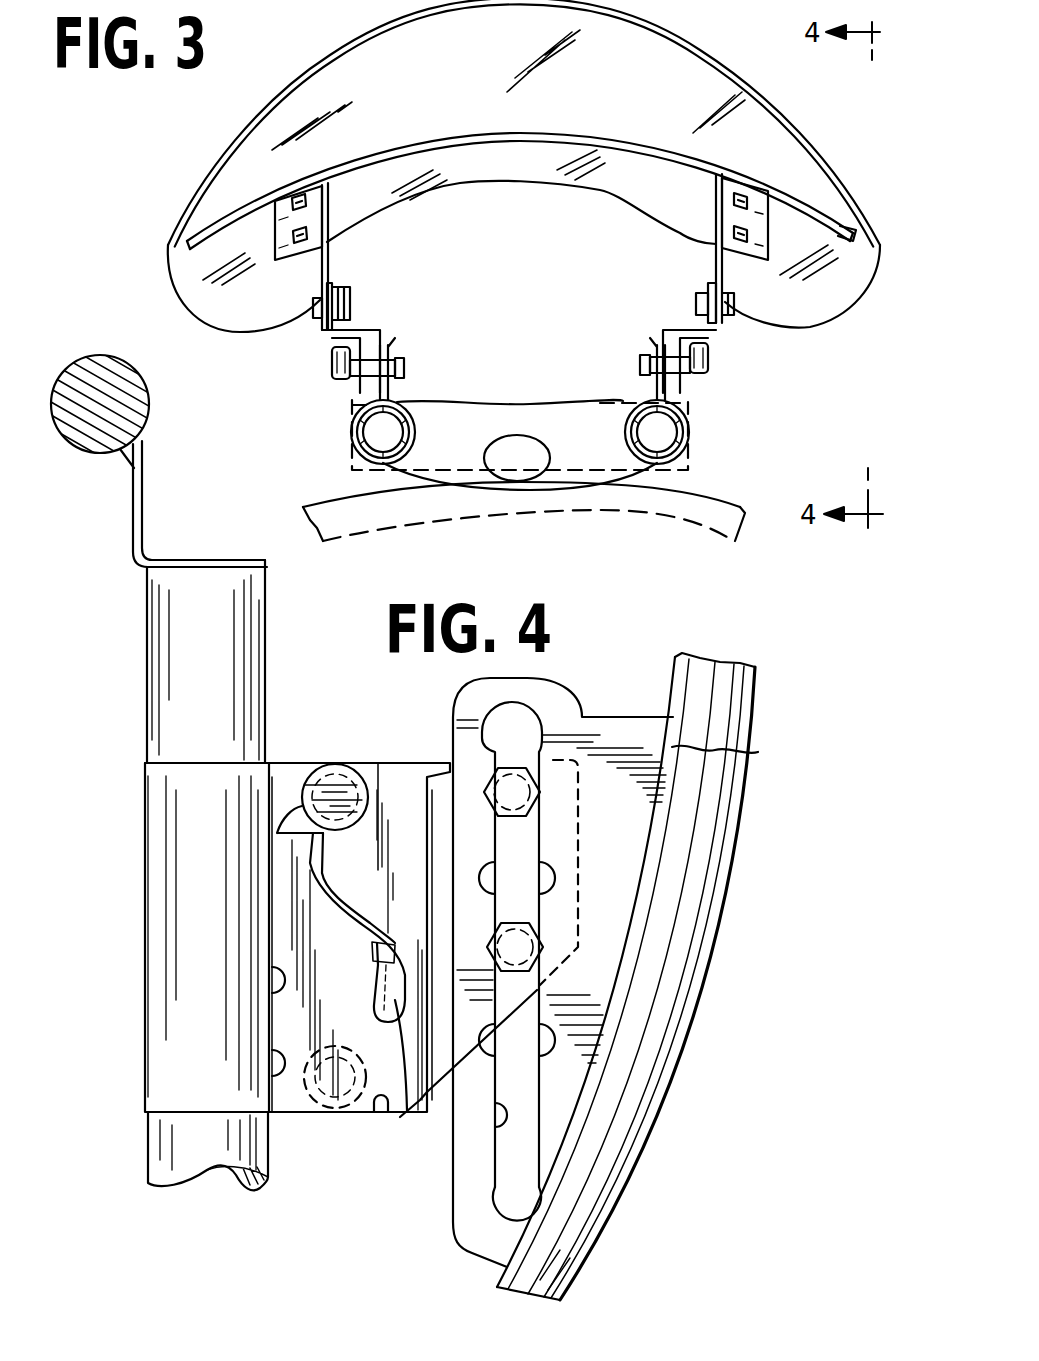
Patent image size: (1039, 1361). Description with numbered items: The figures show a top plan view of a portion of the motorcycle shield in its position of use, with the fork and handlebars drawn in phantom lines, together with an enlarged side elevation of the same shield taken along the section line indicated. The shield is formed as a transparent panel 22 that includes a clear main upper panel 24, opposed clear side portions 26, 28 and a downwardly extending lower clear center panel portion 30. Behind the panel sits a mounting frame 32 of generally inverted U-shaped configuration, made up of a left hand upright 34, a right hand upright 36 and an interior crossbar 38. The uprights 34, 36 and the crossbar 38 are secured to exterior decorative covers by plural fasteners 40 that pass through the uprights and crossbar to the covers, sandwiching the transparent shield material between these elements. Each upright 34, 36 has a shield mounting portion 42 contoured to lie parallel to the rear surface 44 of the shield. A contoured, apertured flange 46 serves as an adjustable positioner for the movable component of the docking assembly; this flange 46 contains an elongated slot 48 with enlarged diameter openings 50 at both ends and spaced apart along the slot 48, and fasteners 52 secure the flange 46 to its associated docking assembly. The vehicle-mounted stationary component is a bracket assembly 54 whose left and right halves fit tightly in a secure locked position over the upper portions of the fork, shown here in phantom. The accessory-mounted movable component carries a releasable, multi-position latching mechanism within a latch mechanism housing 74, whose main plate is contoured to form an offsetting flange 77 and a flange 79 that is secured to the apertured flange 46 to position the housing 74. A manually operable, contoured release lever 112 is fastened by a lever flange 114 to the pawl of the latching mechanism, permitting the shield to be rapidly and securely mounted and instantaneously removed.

In FIG. 3, the transparent panel 22 is at (199, 144).
In FIG. 3, the clear main upper panel 24 is at (646, 48).
In FIG. 3, the clear side portion 26 is at (212, 285).
In FIG. 3, the clear side portion 28 is at (797, 302).
In FIG. 3, the lower clear center panel portion 30 is at (452, 167).
In FIG. 3, the mounting frame 32 is at (354, 163).
In FIG. 3, the left hand upright 34 is at (313, 222).
In FIG. 3, the right hand upright 36 is at (730, 212).
In FIG. 4, the right hand upright 36 is at (678, 685).
In FIG. 3, the interior crossbar 38 is at (511, 140).
In FIG. 3, the fasteners 40 is at (300, 200).
In FIG. 4, the shield mounting portion 42 is at (731, 757).
In FIG. 3, the rear surface 44 is at (833, 255).
In FIG. 4, the apertured flange 46 is at (600, 773).
In FIG. 4, the elongated slot 48 is at (503, 1112).
In FIG. 4, the enlarged diameter openings 50 is at (535, 877).
In FIG. 4, the fasteners 52 is at (500, 787).
In FIG. 3, the bracket assembly 54 is at (689, 390).
In FIG. 4, the latch mechanism housing 74 is at (368, 762).
In FIG. 3, the offsetting flange 77 is at (680, 330).
In FIG. 3, the flange 79 is at (716, 288).
In FIG. 3, the release lever 112 is at (708, 358).
In FIG. 4, the release lever 112 is at (318, 883).
In FIG. 4, the lever flange 114 is at (407, 1112).